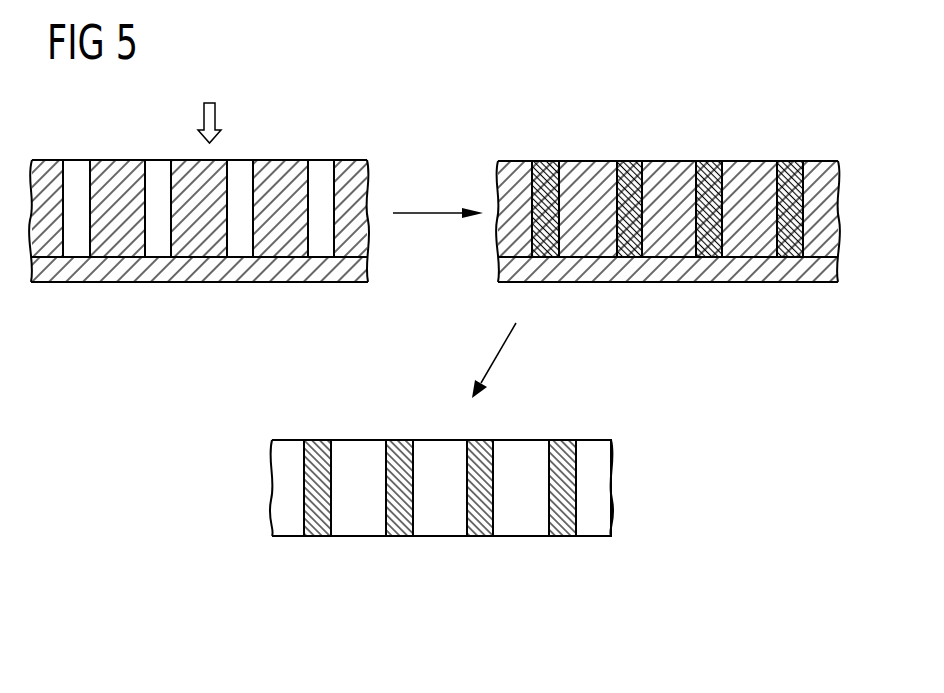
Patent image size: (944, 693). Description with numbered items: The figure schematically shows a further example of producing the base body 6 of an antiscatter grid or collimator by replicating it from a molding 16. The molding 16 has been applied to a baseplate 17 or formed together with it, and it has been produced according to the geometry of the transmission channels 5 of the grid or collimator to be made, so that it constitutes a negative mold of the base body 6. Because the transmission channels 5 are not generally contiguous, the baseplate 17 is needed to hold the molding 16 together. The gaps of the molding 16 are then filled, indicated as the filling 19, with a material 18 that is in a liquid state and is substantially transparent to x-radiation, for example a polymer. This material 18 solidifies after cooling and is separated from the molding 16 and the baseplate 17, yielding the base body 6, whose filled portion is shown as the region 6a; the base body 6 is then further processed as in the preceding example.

The transmission channels 5 is at (590, 176).
The base body 6 is at (605, 440).
The filled slot of structured body 6a is at (565, 532).
The molding 16 is at (345, 160).
The baseplate 17 is at (185, 270).
The material 18 is at (705, 258).
The filling 19 is at (204, 112).